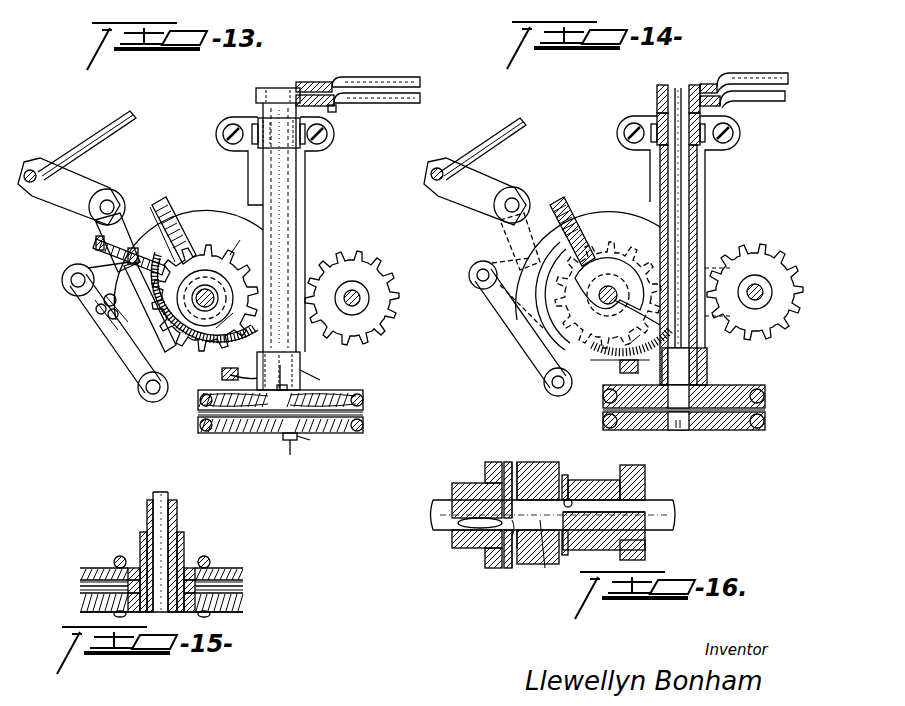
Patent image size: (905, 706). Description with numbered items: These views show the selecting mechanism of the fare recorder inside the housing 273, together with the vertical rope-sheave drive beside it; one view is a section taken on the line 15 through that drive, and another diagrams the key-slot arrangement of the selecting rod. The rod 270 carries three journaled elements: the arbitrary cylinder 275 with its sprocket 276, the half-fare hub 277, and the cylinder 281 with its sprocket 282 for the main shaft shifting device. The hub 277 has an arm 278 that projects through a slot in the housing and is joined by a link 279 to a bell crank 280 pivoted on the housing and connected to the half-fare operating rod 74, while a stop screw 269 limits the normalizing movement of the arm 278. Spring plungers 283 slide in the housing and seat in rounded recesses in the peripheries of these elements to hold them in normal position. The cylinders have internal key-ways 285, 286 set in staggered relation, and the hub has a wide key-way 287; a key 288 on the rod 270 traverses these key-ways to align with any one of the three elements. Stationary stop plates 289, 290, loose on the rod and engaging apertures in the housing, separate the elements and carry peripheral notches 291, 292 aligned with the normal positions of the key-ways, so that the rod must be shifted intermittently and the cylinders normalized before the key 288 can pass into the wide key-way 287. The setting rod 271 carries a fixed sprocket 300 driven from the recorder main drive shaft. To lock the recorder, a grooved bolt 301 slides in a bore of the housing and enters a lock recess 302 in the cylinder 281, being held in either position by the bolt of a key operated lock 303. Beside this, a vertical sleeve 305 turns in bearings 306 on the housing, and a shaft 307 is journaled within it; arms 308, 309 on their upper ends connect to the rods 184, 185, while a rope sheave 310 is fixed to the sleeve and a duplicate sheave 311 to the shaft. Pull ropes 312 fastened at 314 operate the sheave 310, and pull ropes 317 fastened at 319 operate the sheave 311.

In FIG. 13, the section line 15 is at (280, 395).
In FIG. 13, the half-fare operating rod 74 is at (82, 132).
In FIG. 14, the half-fare operating rod 74 is at (495, 140).
In FIG. 13, the rod 184 is at (395, 77).
In FIG. 14, the rod 184 is at (772, 73).
In FIG. 13, the rod 185 is at (402, 103).
In FIG. 14, the rod 185 is at (776, 101).
In FIG. 13, the stop screw 269 is at (222, 374).
In FIG. 14, the stop screw 269 is at (620, 367).
In FIG. 13, the rod 270 is at (208, 292).
In FIG. 14, the rod 270 is at (612, 292).
In FIG. 16, the rod 270 is at (433, 515).
In FIG. 13, the setting rod 271 is at (356, 293).
In FIG. 14, the setting rod 271 is at (758, 288).
In FIG. 13, the housing 273 is at (205, 207).
In FIG. 14, the housing 273 is at (585, 208).
In FIG. 16, the cylinder 275 is at (598, 480).
In FIG. 14, the sprocket 276 is at (572, 292).
In FIG. 16, the sprocket 276 is at (640, 470).
In FIG. 14, the hub 277 is at (612, 260).
In FIG. 16, the hub 277 is at (540, 470).
In FIG. 13, the arm 278 is at (140, 382).
In FIG. 14, the arm 278 is at (544, 380).
In FIG. 13, the link 279 is at (96, 312).
In FIG. 14, the link 279 is at (512, 330).
In FIG. 13, the bell crank 280 is at (68, 196).
In FIG. 14, the bell crank 280 is at (480, 185).
In FIG. 13, the cylinder 281 is at (190, 270).
In FIG. 16, the cylinder 281 is at (488, 463).
In FIG. 13, the sprocket 282 is at (210, 277).
In FIG. 16, the sprocket 282 is at (507, 462).
In FIG. 13, the spring plungers 283 is at (158, 204).
In FIG. 14, the spring plungers 283 is at (555, 203).
In FIG. 16, the key-way 285 is at (640, 505).
In FIG. 13, the key-way 286 is at (205, 362).
In FIG. 16, the key-way 286 is at (460, 525).
In FIG. 14, the wide key-way 287 is at (622, 283).
In FIG. 16, the wide key-way 287 is at (548, 552).
In FIG. 13, the key 288 is at (222, 289).
In FIG. 14, the key 288 is at (612, 310).
In FIG. 16, the key 288 is at (480, 540).
In FIG. 14, the stop plate 289 is at (649, 328).
In FIG. 16, the stop plate 289 is at (568, 552).
In FIG. 13, the stop plate 290 is at (243, 320).
In FIG. 16, the stop plate 290 is at (514, 480).
In FIG. 14, the notch 291 is at (630, 300).
In FIG. 16, the notch 291 is at (566, 478).
In FIG. 16, the notch 292 is at (515, 535).
In FIG. 13, the sprocket 300 is at (386, 278).
In FIG. 14, the sprocket 300 is at (745, 246).
In FIG. 13, the grooved bolt 301 is at (95, 243).
In FIG. 13, the lock recess 302 is at (148, 318).
In FIG. 13, the key operated lock 303 is at (100, 320).
In FIG. 13, the vertical sleeve 305 is at (296, 213).
In FIG. 14, the vertical sleeve 305 is at (697, 212).
In FIG. 15, the vertical sleeve 305 is at (177, 512).
In FIG. 13, the bearings 306 is at (310, 151).
In FIG. 14, the bearings 306 is at (713, 150).
In FIG. 15, the bearings 306 is at (184, 532).
In FIG. 14, the shaft 307 is at (682, 192).
In FIG. 15, the shaft 307 is at (168, 496).
In FIG. 13, the arm 308 is at (300, 86).
In FIG. 14, the arm 308 is at (705, 88).
In FIG. 13, the arm 309 is at (285, 88).
In FIG. 14, the arm 309 is at (700, 88).
In FIG. 13, the rope sheave 310 is at (345, 390).
In FIG. 14, the rope sheave 310 is at (748, 385).
In FIG. 15, the rope sheave 310 is at (243, 586).
In FIG. 13, the duplicate sheave 311 is at (333, 433).
In FIG. 14, the duplicate sheave 311 is at (738, 430).
In FIG. 15, the duplicate sheave 311 is at (243, 610).
In FIG. 13, the pull ropes 312 is at (206, 406).
In FIG. 14, the pull ropes 312 is at (610, 403).
In FIG. 15, the pull ropes 312 is at (80, 574).
In FIG. 13, the fastening points 314 is at (307, 377).
In FIG. 15, the fastening points 314 is at (118, 556).
In FIG. 13, the pull ropes 317 is at (220, 433).
In FIG. 14, the pull ropes 317 is at (603, 421).
In FIG. 15, the pull ropes 317 is at (80, 602).
In FIG. 13, the fastening points 319 is at (310, 445).
In FIG. 15, the fastening points 319 is at (225, 620).